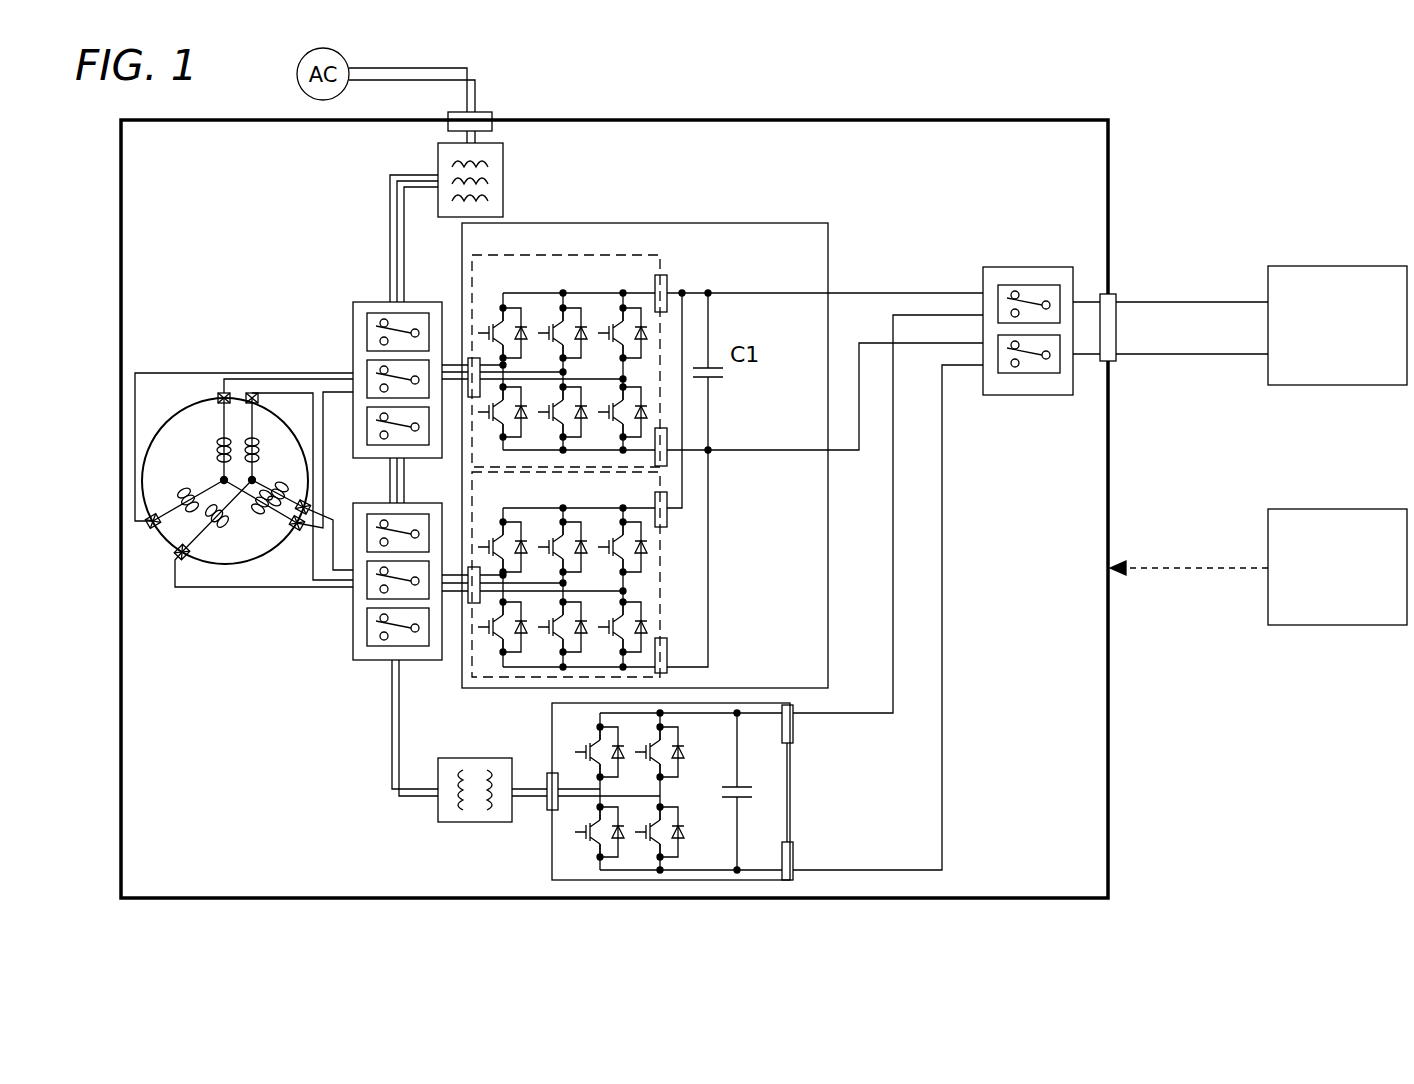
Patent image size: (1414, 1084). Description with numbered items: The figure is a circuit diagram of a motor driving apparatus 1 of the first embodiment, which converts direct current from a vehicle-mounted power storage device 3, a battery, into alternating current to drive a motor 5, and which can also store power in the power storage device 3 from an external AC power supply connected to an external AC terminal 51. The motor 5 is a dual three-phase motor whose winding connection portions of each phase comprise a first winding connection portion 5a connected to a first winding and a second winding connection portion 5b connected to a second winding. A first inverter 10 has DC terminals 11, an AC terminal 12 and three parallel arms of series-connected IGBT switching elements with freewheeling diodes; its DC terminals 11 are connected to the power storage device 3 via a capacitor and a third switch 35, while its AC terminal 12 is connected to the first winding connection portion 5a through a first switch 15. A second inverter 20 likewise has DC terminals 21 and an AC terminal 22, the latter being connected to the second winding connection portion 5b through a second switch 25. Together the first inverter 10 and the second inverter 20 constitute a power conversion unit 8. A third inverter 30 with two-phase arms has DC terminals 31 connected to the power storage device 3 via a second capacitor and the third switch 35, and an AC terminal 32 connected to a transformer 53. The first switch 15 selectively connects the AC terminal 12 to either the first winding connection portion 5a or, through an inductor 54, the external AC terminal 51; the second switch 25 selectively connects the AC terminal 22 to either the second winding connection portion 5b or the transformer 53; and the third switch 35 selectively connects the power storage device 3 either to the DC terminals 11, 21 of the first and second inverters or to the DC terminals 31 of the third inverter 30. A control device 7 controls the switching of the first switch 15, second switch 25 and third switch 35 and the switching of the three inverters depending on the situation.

The motor driving apparatus 1 is at (1160, 95).
The power storage device 3 is at (1340, 266).
The motor 5 is at (158, 535).
The first winding connection portion 5a is at (224, 392).
The second winding connection portion 5b is at (255, 392).
The control device 7 is at (1340, 509).
The power conversion unit 8 is at (830, 248).
The first inverter 10 is at (603, 252).
The DC terminals 11 is at (668, 289).
The AC terminal 12 is at (466, 356).
The first switch 15 is at (372, 302).
The second inverter 20 is at (500, 690).
The DC terminals 21 is at (680, 522).
The AC terminal 22 is at (466, 606).
The second switch 25 is at (366, 660).
The third inverter 30 is at (697, 881).
The DC terminals 31 is at (795, 735).
The AC terminal 32 is at (548, 811).
The third switch 35 is at (1030, 266).
The external AC terminal 51 is at (490, 110).
The transformer 53 is at (478, 823).
The inductor 54 is at (504, 180).